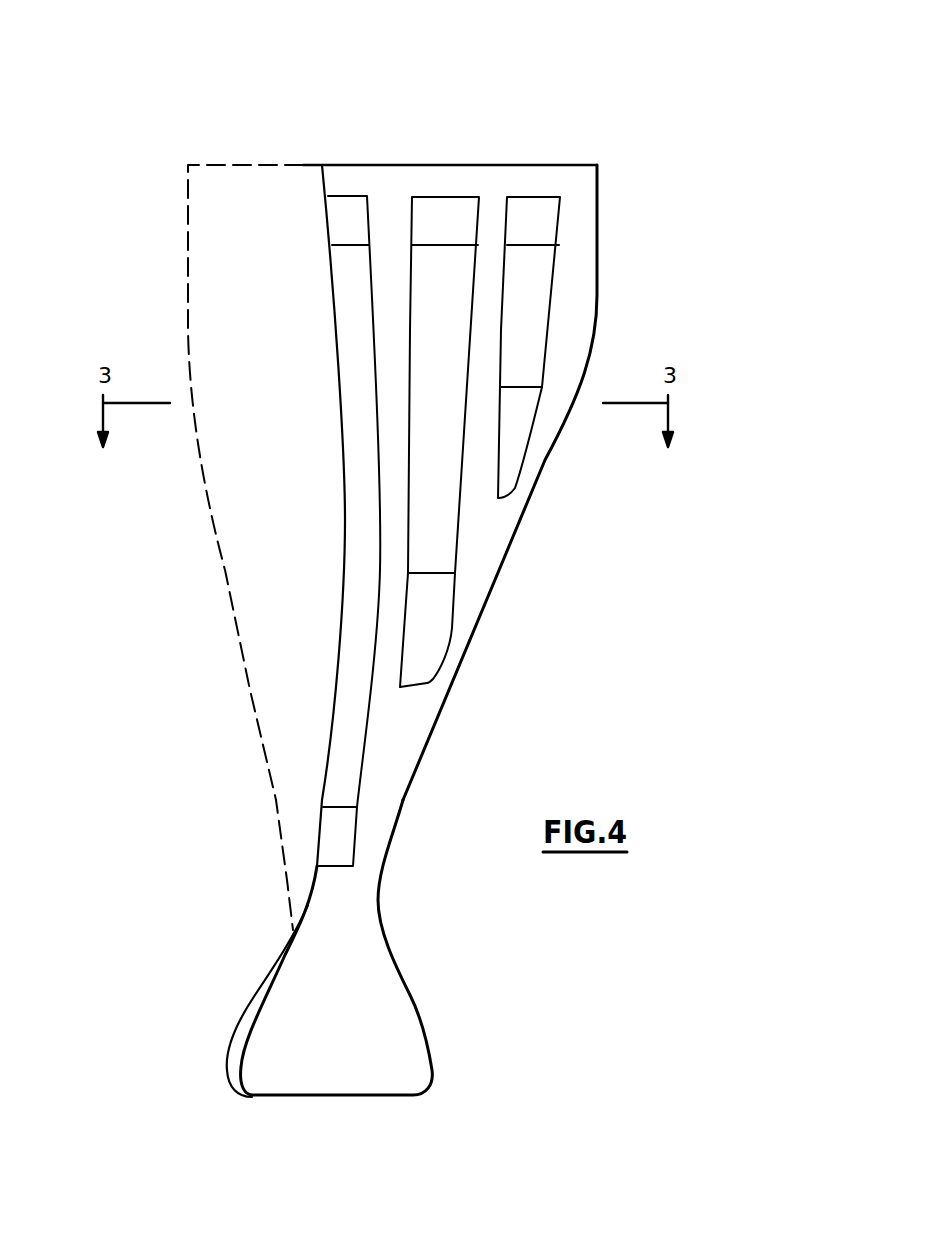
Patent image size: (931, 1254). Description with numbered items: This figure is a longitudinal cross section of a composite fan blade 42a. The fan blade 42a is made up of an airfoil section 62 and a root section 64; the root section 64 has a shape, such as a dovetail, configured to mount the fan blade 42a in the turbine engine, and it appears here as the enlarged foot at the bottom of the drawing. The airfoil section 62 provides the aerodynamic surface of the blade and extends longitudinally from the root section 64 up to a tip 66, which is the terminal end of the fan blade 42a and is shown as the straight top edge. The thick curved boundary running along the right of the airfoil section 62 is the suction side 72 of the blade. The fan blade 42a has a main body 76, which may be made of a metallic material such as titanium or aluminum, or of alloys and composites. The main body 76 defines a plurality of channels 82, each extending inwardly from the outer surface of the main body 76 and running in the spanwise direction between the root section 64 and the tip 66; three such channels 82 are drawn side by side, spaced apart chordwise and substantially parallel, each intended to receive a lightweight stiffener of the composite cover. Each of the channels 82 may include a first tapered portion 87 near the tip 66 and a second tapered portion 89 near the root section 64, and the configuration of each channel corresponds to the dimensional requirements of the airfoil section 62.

The fan blade 42a is at (137, 68).
The airfoil section 62 is at (742, 262).
The root section 64 is at (461, 1010).
The tip 66 is at (395, 165).
The suction side 72 is at (493, 540).
The main body 76 is at (537, 182).
The channels 82 is at (370, 309).
The first tapered portion 87 is at (350, 224).
The second tapered portion 89 is at (332, 840).